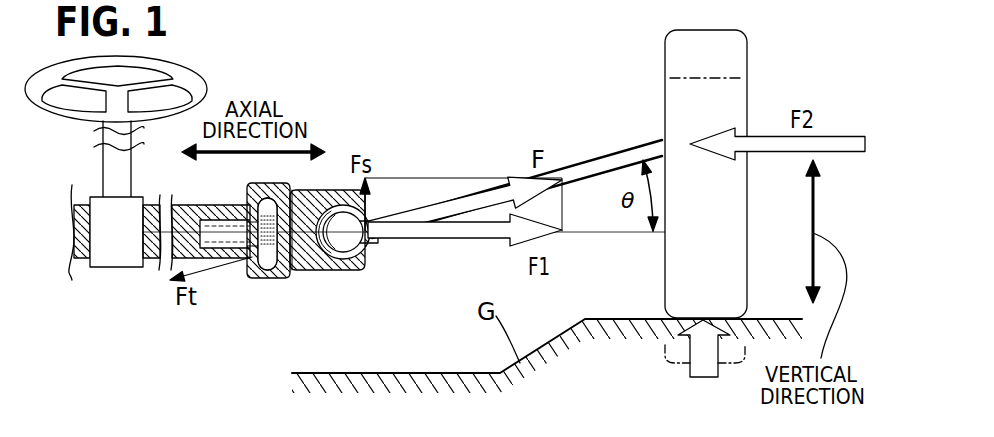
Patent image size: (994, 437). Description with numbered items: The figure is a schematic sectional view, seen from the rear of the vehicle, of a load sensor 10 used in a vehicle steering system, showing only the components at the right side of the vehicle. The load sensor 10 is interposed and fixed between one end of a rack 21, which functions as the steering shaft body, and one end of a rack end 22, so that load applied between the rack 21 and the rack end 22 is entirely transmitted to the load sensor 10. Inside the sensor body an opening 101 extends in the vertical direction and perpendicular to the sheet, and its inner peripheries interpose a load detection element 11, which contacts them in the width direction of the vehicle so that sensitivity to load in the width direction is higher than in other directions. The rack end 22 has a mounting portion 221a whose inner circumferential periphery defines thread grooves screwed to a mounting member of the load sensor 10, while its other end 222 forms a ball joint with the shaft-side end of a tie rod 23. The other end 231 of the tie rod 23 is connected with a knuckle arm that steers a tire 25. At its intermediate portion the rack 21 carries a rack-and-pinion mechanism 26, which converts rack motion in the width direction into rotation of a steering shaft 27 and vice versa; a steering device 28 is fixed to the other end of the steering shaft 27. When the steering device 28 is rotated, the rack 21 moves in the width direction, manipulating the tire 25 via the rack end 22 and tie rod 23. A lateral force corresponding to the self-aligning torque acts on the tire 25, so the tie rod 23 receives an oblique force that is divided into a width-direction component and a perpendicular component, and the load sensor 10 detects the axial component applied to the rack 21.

The load sensor 10 is at (262, 280).
The opening 101 is at (268, 262).
The load detection element 11 is at (260, 222).
The rack 21 is at (209, 255).
The rack end 22 is at (328, 268).
The mounting portion 221a is at (312, 268).
The other end of rack end 222 is at (372, 243).
The tie rod 23 is at (606, 163).
The other end of tie rod 231 is at (343, 247).
The tire 25 is at (719, 204).
The rack-and-pinion mechanism 26 is at (117, 253).
The steering shaft 27 is at (108, 163).
The steering device 28 is at (198, 79).